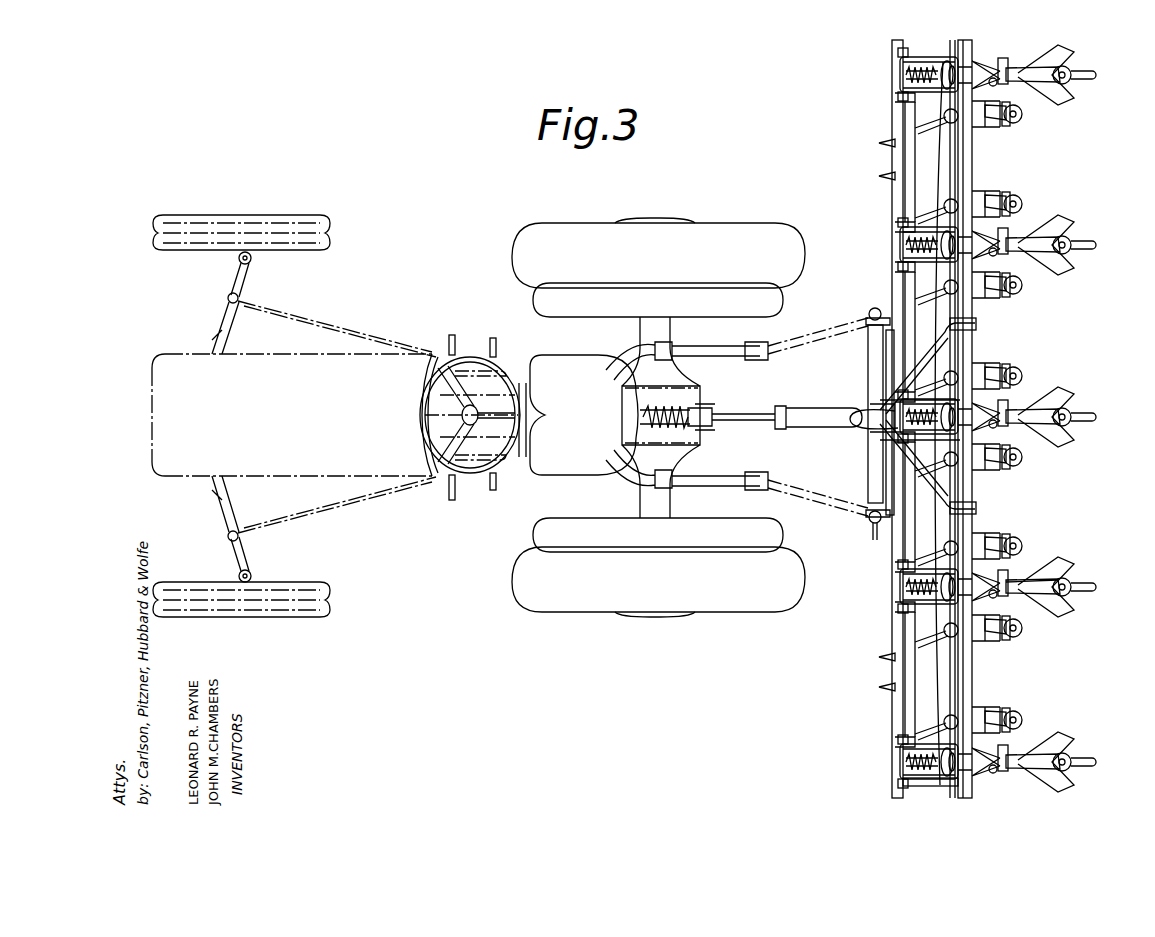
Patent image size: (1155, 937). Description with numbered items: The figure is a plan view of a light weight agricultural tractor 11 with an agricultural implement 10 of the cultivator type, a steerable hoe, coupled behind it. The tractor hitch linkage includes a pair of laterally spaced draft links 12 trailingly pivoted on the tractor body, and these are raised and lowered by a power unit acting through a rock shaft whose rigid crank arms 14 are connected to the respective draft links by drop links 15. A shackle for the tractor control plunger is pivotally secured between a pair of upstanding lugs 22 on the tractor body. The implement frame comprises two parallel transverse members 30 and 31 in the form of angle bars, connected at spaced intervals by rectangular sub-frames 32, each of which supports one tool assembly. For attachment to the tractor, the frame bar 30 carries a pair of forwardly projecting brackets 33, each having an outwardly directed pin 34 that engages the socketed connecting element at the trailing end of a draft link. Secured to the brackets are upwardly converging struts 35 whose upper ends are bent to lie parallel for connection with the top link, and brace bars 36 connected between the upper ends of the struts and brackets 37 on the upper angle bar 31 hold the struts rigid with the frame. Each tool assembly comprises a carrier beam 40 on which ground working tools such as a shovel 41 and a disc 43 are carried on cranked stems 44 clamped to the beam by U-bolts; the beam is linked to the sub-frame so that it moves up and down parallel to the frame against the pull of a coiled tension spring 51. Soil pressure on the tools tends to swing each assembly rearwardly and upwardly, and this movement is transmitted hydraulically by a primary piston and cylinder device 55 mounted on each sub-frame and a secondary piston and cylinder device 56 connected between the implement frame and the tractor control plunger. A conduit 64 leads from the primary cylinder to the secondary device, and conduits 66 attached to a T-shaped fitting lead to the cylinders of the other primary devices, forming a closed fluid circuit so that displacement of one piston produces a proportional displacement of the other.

The agricultural implement 10 is at (1004, 341).
The agricultural tractor 11 is at (791, 209).
The draft links 12 is at (812, 318).
The crank arms 14 is at (630, 348).
The drop links 15 is at (680, 346).
The upstanding lugs 22 is at (700, 425).
The transverse member 30 is at (895, 798).
The transverse member 31 is at (966, 162).
The rectangular sub-frames 32 is at (925, 785).
The brackets 33 is at (868, 326).
The pin 34 is at (872, 312).
The struts 35 is at (868, 366).
The brace bars 36 is at (940, 348).
The brackets 37 is at (968, 326).
The carrier beam 40 is at (1000, 396).
The shovel 41 is at (1058, 438).
The disc 43 is at (882, 652).
The cranked stem 44 is at (1035, 595).
The spring 51 is at (900, 598).
The primary piston and cylinder device 55 is at (900, 770).
The secondary piston and cylinder device 56 is at (825, 396).
The conduit 64 is at (864, 422).
The conduits 66 is at (935, 675).